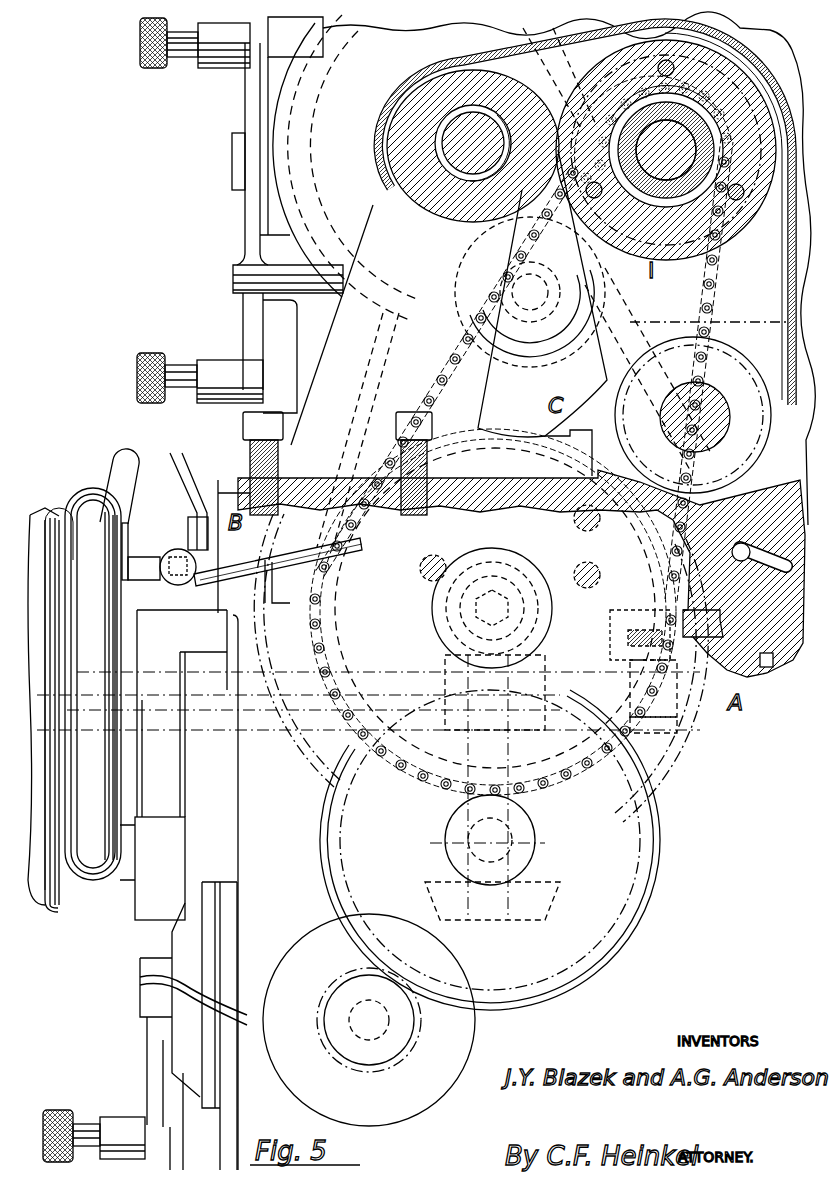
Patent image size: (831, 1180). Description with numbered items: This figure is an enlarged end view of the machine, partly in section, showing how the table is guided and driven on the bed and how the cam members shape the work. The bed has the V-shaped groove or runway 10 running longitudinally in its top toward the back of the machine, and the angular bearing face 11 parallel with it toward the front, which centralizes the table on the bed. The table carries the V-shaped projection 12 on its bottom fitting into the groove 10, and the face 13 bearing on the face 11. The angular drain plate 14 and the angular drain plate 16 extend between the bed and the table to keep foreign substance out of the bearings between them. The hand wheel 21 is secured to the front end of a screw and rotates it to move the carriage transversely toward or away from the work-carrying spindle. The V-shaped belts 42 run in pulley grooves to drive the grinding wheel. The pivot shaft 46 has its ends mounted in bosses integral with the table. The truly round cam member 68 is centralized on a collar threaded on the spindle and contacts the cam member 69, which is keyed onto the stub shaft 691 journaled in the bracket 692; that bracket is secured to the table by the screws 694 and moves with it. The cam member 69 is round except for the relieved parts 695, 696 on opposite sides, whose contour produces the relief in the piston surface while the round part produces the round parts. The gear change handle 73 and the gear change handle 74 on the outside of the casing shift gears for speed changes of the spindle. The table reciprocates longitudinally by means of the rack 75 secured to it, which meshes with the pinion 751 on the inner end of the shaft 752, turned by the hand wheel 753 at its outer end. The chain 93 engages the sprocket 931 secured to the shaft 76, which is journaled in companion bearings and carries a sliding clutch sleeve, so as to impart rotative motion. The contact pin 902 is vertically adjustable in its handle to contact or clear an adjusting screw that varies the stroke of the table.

The V-shaped groove or runway 10 is at (762, 629).
The bearing face 11 is at (288, 584).
The V-shaped projection 12 is at (738, 676).
The face 13 is at (305, 560).
The angular drain plate 14 is at (195, 582).
The angular drain plate 16 is at (778, 525).
The hand wheel 21 is at (42, 908).
The belts 42 is at (385, 75).
The pivot shaft 46 is at (705, 428).
The cam member 68 is at (640, 240).
The cam member 69 is at (452, 215).
The gear change handle 73 is at (250, 327).
The gear change handle 74 is at (250, 208).
The rack 75 is at (632, 618).
The shaft 76 is at (505, 598).
The chain 93 is at (415, 412).
The stub shaft 691 is at (490, 250).
The bracket 692 is at (470, 300).
The screws 694 is at (243, 420).
The relieved part 695 is at (430, 228).
The relieved part 696 is at (455, 52).
The pinion 751 is at (668, 735).
The shaft 752 is at (685, 712).
The hand wheel 753 is at (110, 806).
The contact pin 902 is at (152, 560).
The sprocket 931 is at (322, 642).